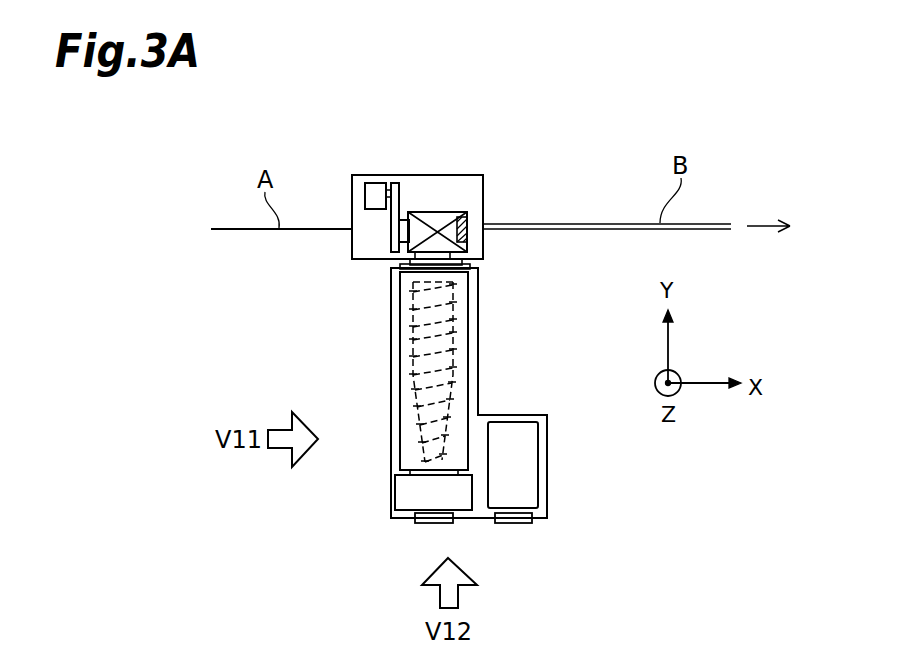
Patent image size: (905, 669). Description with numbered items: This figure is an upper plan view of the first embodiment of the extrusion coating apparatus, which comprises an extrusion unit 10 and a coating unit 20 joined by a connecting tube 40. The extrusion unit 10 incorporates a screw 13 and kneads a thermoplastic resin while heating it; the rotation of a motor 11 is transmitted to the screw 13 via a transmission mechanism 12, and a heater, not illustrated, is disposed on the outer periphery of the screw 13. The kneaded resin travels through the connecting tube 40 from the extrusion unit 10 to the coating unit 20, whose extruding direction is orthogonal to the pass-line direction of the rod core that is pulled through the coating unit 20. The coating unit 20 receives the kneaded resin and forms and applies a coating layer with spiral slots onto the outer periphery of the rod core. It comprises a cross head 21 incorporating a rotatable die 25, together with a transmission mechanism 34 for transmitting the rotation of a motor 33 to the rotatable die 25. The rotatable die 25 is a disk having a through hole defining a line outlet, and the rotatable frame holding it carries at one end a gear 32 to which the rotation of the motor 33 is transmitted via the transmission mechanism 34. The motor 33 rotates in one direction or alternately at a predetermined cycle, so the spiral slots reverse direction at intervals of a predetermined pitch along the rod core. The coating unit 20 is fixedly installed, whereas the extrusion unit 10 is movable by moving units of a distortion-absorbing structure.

The extrusion unit 10 is at (497, 345).
The motor 11 is at (532, 465).
The transmission mechanism 12 is at (456, 518).
The screw 13 is at (413, 375).
The coating unit 20 is at (453, 175).
The cross head 21 is at (456, 211).
The rotatable die 25 is at (466, 228).
The gear 32 is at (391, 235).
The motor 33 is at (376, 182).
The transmission mechanism 34 is at (402, 190).
The connecting tube 40 is at (462, 256).